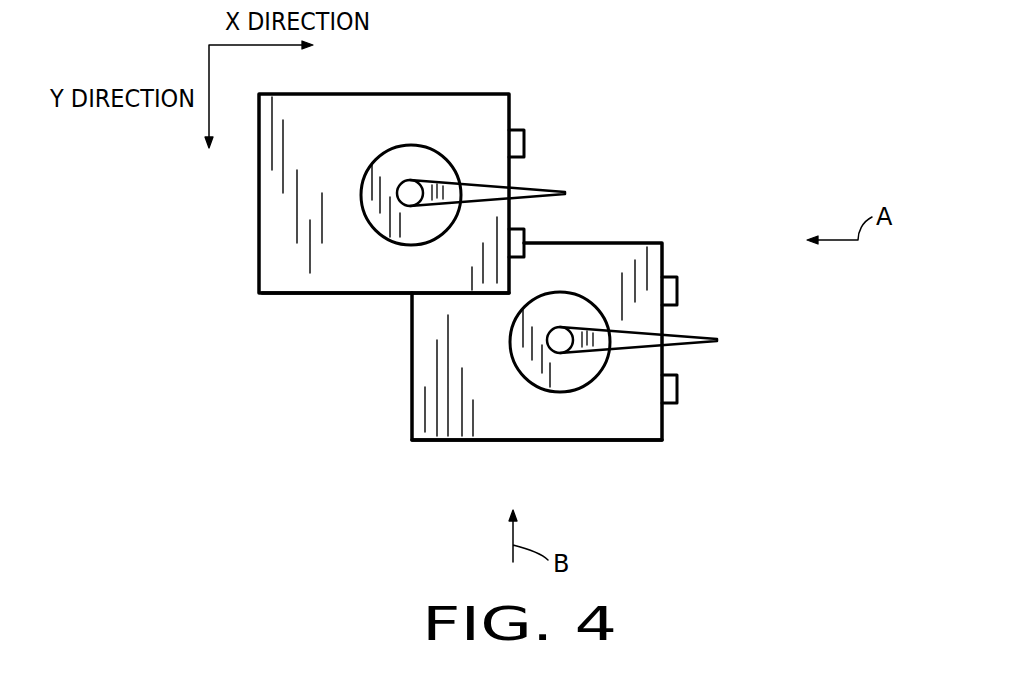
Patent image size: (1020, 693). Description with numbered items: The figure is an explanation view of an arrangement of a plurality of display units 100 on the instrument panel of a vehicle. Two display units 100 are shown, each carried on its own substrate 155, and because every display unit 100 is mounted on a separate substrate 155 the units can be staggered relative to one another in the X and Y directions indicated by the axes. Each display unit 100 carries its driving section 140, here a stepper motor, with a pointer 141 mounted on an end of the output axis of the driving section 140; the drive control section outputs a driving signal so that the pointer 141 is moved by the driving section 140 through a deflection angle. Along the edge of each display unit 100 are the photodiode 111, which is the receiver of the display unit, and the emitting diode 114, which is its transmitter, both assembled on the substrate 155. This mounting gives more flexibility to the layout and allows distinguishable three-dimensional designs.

The display unit 100 is at (258, 206).
The photodiode 111 is at (517, 128).
The emitting diode 114 is at (522, 230).
The driving section 140 is at (393, 145).
The pointer 141 is at (535, 190).
The substrate 155 is at (335, 297).